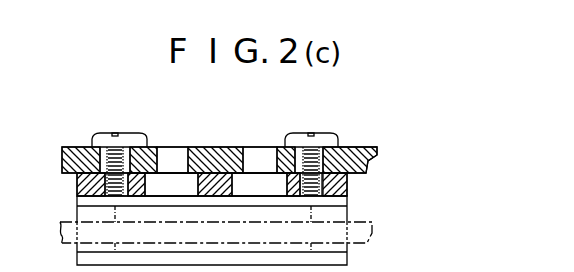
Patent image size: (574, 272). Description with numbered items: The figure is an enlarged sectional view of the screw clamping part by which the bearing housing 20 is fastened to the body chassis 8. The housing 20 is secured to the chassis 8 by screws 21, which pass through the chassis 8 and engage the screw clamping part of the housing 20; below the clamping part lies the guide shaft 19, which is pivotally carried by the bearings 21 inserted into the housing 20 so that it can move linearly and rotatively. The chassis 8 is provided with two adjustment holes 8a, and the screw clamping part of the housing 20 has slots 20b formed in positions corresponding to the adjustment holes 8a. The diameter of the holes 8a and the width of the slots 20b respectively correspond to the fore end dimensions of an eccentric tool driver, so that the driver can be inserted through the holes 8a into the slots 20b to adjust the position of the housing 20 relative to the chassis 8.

The body chassis 8 is at (60, 162).
The adjustment holes 8a is at (163, 152).
The bearing housing 20 is at (78, 188).
The slots 20b is at (259, 181).
The guide shaft 19 is at (364, 217).
The screws 21 is at (97, 142).